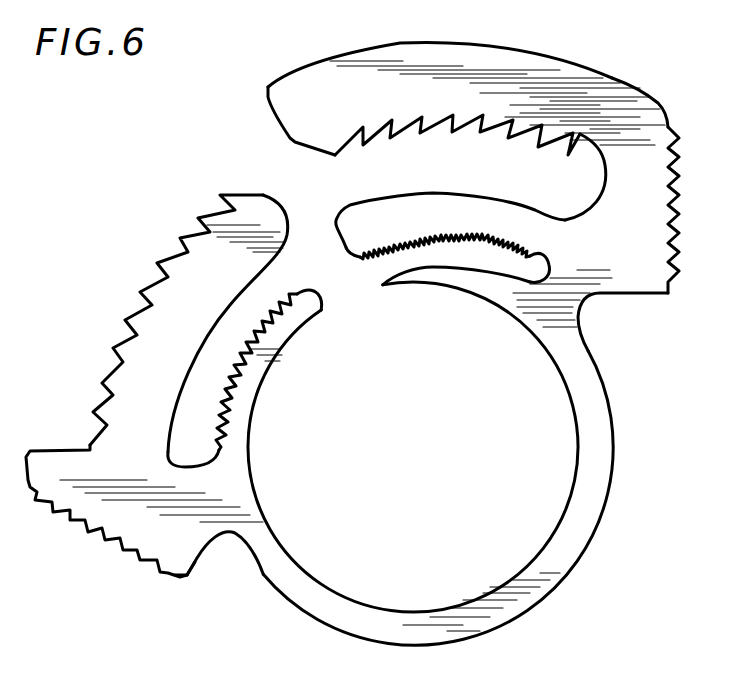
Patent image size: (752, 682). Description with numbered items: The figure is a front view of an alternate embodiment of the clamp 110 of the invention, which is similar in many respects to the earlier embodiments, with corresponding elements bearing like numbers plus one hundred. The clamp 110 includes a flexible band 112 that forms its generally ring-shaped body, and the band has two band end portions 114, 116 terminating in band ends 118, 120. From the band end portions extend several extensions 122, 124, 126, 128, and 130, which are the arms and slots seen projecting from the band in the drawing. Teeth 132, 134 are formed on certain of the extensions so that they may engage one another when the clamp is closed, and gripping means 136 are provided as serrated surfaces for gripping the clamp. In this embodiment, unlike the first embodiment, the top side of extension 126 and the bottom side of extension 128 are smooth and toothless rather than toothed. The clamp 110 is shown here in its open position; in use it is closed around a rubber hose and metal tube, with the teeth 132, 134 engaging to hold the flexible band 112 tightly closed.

The clamp 110 is at (509, 28).
The flexible band 112 is at (614, 475).
The band end portion 114 is at (592, 345).
The band end portion 116 is at (248, 553).
The band end 118 is at (658, 97).
The band end 120 is at (180, 580).
The extension 122 is at (362, 114).
The extension 124 is at (505, 296).
The extension 126 is at (452, 236).
The extension 128 is at (197, 327).
The extension 130 is at (252, 424).
The teeth 132 is at (188, 236).
The teeth 134 is at (250, 348).
The gripping means 136 is at (682, 188).